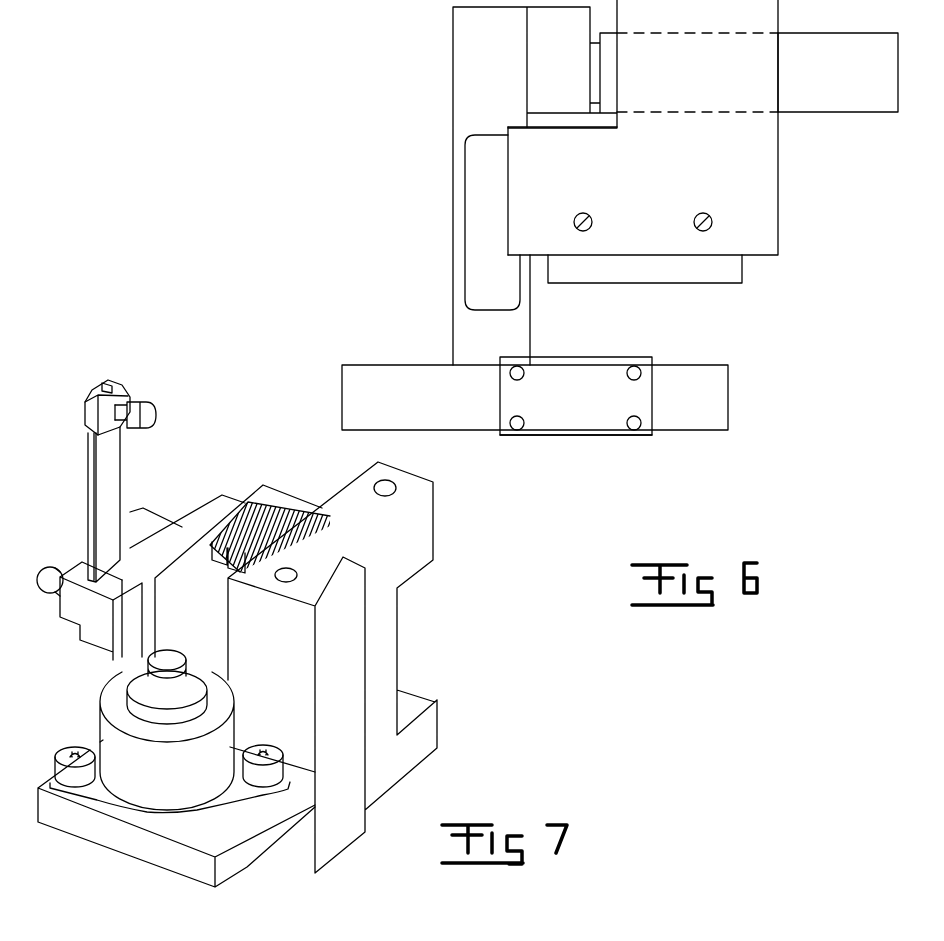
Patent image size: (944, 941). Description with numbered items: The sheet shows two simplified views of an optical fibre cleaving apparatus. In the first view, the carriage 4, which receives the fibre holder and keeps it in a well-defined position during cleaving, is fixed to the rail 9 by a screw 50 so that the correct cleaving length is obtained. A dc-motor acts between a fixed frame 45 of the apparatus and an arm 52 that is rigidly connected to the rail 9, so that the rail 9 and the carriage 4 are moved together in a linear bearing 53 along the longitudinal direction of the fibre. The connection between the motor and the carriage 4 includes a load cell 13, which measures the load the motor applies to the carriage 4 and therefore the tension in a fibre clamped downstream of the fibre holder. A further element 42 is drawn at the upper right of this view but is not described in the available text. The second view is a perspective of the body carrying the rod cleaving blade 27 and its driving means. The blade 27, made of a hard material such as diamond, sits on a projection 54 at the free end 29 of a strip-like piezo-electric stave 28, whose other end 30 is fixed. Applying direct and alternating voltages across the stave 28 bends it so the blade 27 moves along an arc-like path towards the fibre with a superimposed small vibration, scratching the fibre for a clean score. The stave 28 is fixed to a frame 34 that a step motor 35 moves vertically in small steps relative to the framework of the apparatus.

In FIG. 6, the carriage 4 is at (605, 360).
In FIG. 6, the rail 9 is at (728, 383).
In FIG. 6, the load cell 13 is at (498, 207).
In FIG. 6, the drive shaft housing 42 is at (812, 38).
In FIG. 6, the fixed frame 45 is at (767, 203).
In FIG. 6, the screw 50 is at (578, 437).
In FIG. 6, the arm 52 is at (458, 82).
In FIG. 6, the linear bearing 53 is at (712, 278).
In FIG. 7, the rod cleaving blade 27 is at (160, 420).
In FIG. 7, the stave 28 is at (92, 502).
In FIG. 7, the free end 29 is at (122, 381).
In FIG. 7, the other end 30 is at (95, 578).
In FIG. 7, the frame 34 is at (95, 618).
In FIG. 7, the step motor 35 is at (160, 788).
In FIG. 7, the projection 54 is at (120, 413).